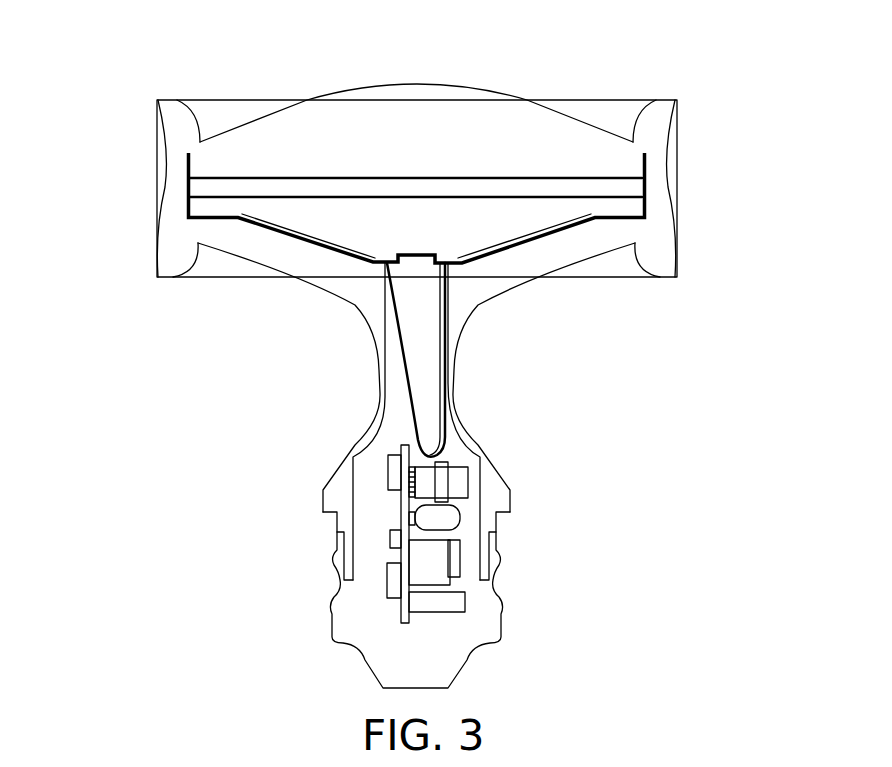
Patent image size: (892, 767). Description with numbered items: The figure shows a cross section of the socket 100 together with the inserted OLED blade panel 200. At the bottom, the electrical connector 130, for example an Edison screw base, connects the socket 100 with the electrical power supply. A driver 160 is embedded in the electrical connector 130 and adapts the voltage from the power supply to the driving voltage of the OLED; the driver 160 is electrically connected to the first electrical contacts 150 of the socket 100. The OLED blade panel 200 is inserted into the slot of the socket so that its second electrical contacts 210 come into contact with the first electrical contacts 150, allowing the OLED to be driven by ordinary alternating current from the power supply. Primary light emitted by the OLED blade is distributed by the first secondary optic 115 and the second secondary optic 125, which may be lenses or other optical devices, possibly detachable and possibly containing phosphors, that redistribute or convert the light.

The socket 100 is at (113, 94).
The first secondary optic 115 is at (583, 257).
The second secondary optic 125 is at (487, 100).
The electrical connector 130 is at (332, 550).
The first electrical contacts 150 is at (647, 170).
The driver 160 is at (460, 517).
The OLED blade panel 200 is at (628, 190).
The second electrical contacts 210 is at (163, 183).